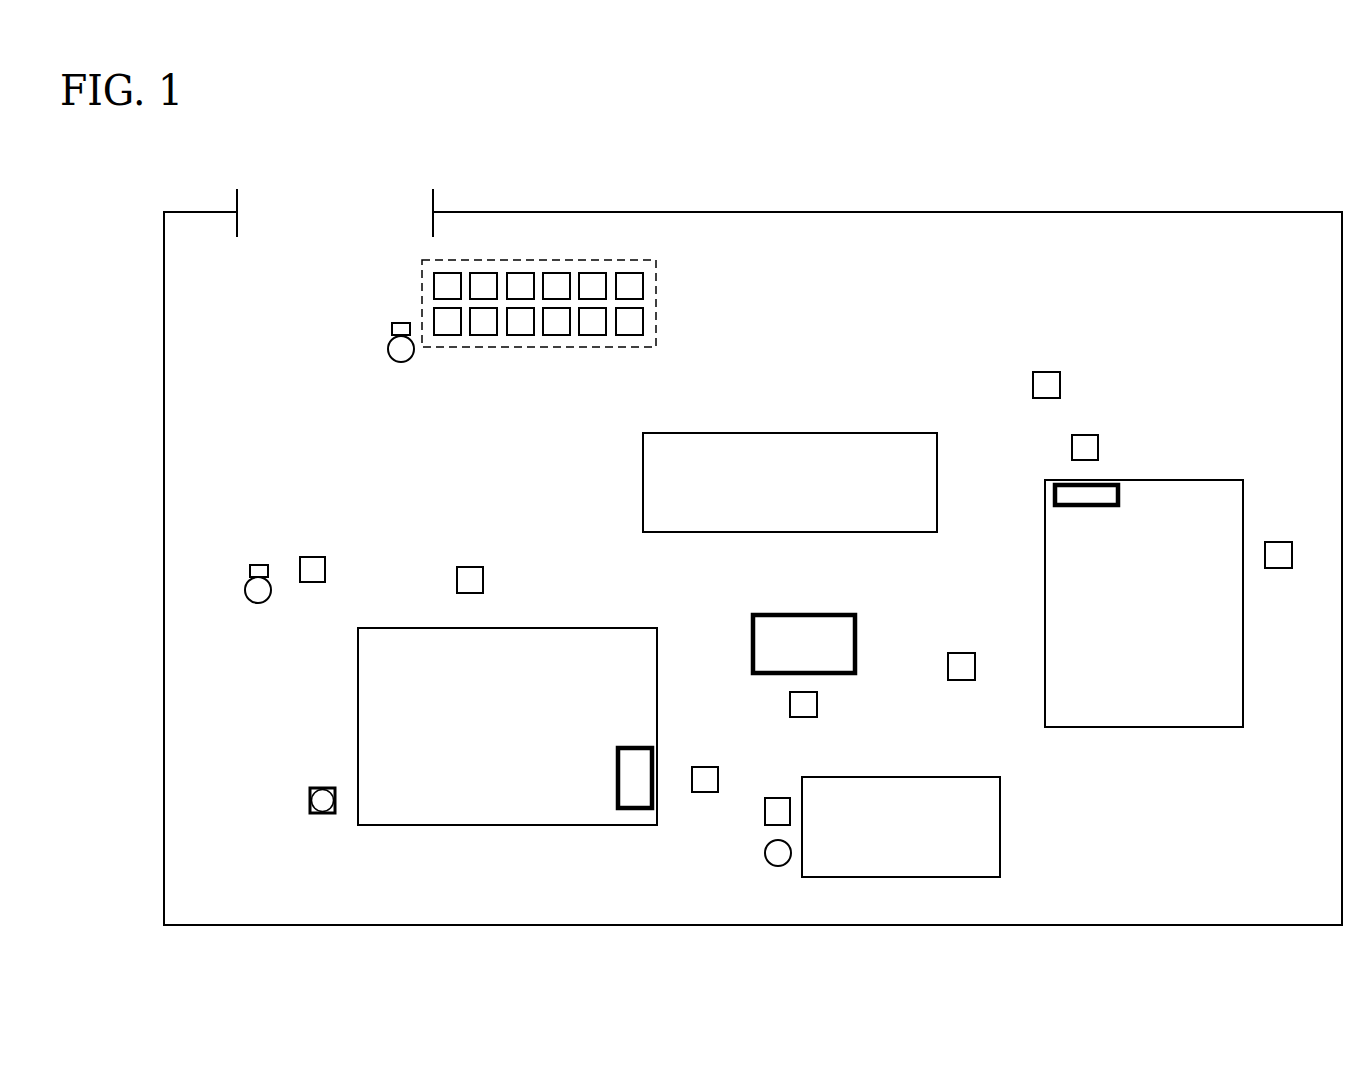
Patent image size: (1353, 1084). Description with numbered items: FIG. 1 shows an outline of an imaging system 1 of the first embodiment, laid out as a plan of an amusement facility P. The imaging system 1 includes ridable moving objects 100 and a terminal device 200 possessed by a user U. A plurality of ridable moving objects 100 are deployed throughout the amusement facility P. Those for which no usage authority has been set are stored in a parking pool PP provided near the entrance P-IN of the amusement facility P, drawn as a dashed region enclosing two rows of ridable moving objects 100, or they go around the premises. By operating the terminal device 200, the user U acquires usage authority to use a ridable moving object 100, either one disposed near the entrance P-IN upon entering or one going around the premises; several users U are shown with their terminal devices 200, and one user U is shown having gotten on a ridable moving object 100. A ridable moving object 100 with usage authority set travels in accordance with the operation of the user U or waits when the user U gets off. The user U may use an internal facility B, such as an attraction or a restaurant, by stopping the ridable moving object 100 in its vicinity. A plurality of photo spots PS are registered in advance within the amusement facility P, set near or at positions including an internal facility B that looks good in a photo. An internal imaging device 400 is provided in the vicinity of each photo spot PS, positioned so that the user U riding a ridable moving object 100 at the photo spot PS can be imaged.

The imaging system 1 is at (1278, 181).
The ridable moving object 100 is at (592, 273).
The terminal device 200 is at (392, 323).
The internal imaging device 400 is at (1071, 446).
The amusement facility P is at (751, 210).
The entrance P-IN is at (434, 201).
The parking pool PP is at (657, 300).
The internal facility B is at (789, 432).
The photo spot PS is at (1088, 508).
The user U is at (401, 362).